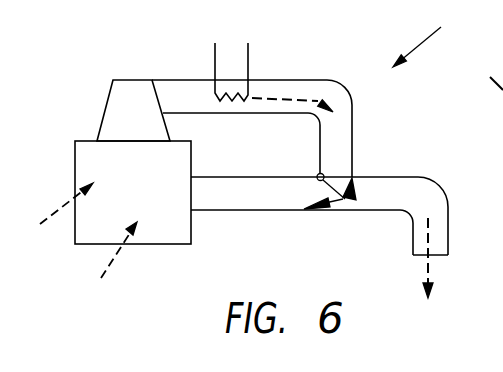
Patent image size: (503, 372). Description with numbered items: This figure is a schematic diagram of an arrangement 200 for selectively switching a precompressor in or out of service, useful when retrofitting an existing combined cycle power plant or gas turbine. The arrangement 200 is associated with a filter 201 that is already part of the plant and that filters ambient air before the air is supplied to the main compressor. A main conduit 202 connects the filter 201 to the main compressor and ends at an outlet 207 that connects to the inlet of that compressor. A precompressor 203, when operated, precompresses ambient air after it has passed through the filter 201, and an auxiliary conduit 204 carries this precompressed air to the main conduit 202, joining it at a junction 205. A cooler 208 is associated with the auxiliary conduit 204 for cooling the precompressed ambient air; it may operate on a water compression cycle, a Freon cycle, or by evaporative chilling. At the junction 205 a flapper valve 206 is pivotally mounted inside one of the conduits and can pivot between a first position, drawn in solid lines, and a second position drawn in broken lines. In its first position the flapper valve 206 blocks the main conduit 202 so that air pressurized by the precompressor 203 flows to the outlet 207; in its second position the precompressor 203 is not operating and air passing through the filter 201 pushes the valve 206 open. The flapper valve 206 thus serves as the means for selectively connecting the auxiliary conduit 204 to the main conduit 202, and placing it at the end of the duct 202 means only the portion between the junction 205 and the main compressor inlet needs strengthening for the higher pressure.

The arrangement 200 is at (425, 33).
The filter 201 is at (78, 180).
The main conduit 202 is at (265, 211).
The precompressor 203 is at (130, 80).
The auxiliary conduit 204 is at (317, 79).
The junction 205 is at (375, 211).
The flapper valve 206 is at (357, 198).
The outlet 207 is at (440, 256).
The cooler 208 is at (232, 102).